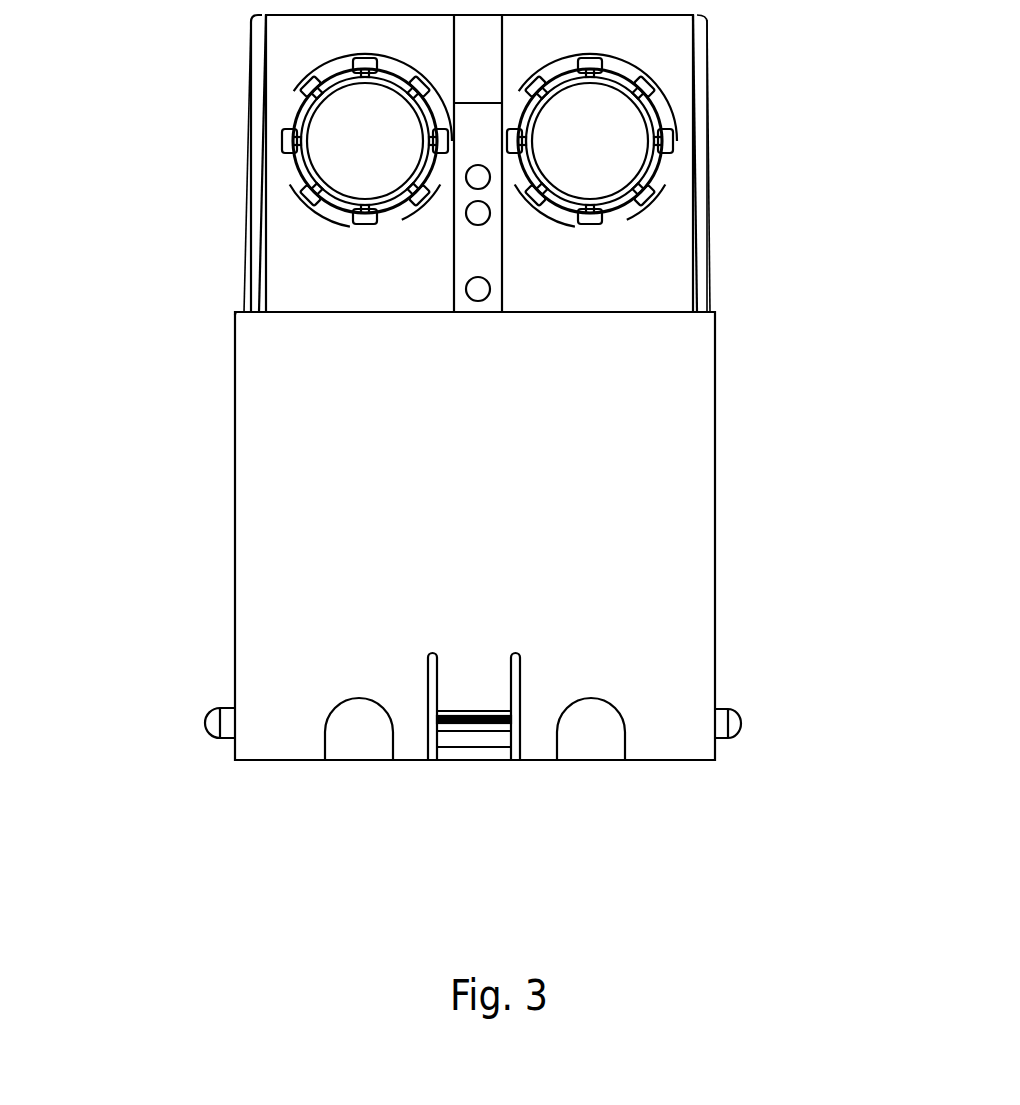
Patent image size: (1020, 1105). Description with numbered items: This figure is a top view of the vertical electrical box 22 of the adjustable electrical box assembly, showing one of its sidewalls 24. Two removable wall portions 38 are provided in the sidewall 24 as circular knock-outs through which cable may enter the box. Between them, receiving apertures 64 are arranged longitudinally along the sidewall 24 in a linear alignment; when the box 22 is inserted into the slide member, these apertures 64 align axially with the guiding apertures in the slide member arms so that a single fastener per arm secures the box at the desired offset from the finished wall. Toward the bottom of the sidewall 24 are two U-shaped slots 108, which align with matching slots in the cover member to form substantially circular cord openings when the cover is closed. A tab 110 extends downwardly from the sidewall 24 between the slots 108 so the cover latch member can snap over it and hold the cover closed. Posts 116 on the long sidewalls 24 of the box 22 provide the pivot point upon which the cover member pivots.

The electrical box 22 is at (470, 442).
The sidewalls 24 is at (475, 536).
The removable wall portions 38 is at (479, 140).
The receiving apertures 64 is at (478, 289).
The U-shaped slots 108 is at (590, 740).
The tab 110 is at (477, 760).
The posts 116 is at (743, 722).